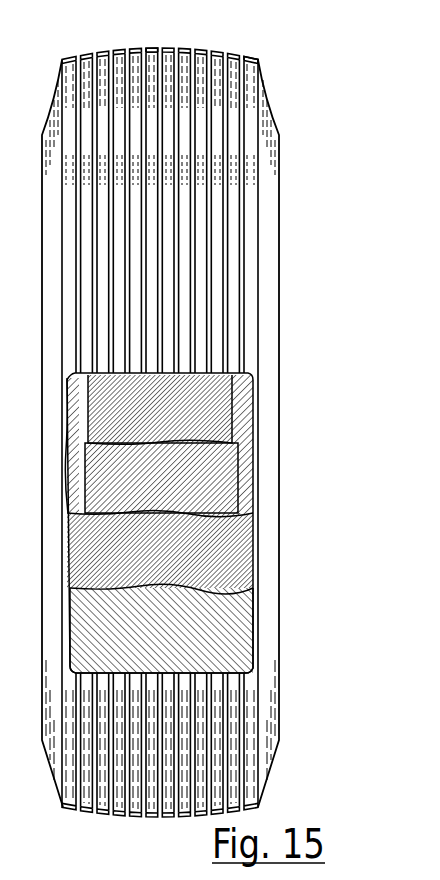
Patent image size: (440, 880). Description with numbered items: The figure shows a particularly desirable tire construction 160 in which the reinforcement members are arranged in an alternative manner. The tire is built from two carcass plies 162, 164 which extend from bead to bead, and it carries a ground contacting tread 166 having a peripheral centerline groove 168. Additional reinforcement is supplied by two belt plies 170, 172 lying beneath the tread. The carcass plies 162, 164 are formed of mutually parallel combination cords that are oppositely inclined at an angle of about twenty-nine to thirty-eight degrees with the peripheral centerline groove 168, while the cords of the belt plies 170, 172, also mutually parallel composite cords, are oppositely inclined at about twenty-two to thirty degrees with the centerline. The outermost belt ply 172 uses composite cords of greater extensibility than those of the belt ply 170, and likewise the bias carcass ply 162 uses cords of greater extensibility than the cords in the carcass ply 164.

The tire construction 160 is at (283, 157).
The ground contacting tread 166 is at (258, 53).
The peripheral centerline groove 168 is at (158, 47).
The belt ply 172 is at (198, 392).
The belt ply 170 is at (225, 467).
The carcass ply 162 is at (225, 547).
The carcass ply 164 is at (240, 635).